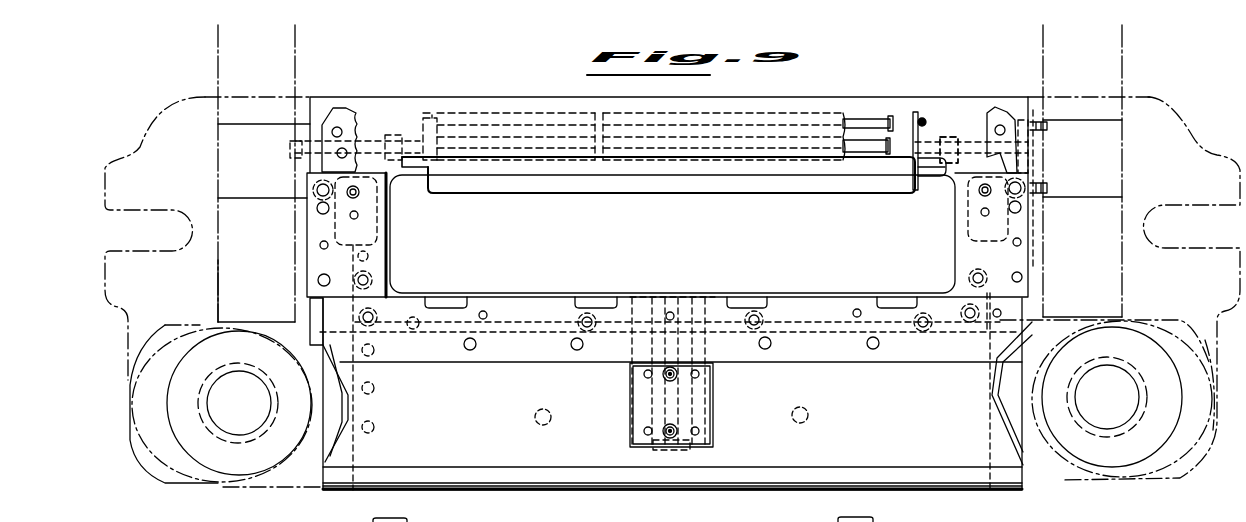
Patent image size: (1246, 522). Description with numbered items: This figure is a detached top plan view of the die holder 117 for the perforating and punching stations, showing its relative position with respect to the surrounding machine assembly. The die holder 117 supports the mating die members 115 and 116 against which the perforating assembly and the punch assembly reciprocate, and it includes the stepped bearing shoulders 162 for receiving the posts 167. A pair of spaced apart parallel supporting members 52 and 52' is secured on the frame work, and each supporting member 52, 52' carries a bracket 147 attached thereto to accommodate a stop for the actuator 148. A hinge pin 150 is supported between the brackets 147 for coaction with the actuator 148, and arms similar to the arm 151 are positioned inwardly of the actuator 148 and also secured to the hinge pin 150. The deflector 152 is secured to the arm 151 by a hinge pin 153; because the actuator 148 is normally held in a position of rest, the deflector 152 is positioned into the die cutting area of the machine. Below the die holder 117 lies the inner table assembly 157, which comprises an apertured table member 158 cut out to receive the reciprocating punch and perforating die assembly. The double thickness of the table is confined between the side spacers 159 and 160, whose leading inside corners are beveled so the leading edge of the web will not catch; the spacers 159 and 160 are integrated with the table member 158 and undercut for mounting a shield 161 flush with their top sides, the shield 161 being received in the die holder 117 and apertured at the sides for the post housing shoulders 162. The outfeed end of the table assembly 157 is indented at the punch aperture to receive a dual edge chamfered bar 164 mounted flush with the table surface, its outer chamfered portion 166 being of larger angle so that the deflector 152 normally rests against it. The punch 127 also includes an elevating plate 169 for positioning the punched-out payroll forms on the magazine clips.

The supporting member 52 is at (1098, 171).
The supporting member 52' is at (275, 173).
The die member 115 is at (713, 405).
The die member 116 is at (347, 110).
The die holder 117 is at (1145, 97).
The punch 127 is at (529, 296).
The bracket 147 is at (268, 200).
The actuator 148 is at (1020, 118).
The hinge pin 150 is at (855, 152).
The arm 151 is at (456, 116).
The deflector 152 is at (618, 186).
The hinge pin 153 is at (862, 119).
The inner table assembly 157 is at (722, 492).
The table member 158 is at (965, 100).
The side spacer 159 is at (990, 441).
The side spacer 160 is at (348, 454).
The shield 161 is at (798, 462).
The post housing shoulder 162 is at (1157, 320).
The dual edge chamfered bar 164 is at (918, 167).
The chamfered portion 166 is at (945, 178).
The post 167 is at (1113, 409).
The elevating plate 169 is at (534, 297).